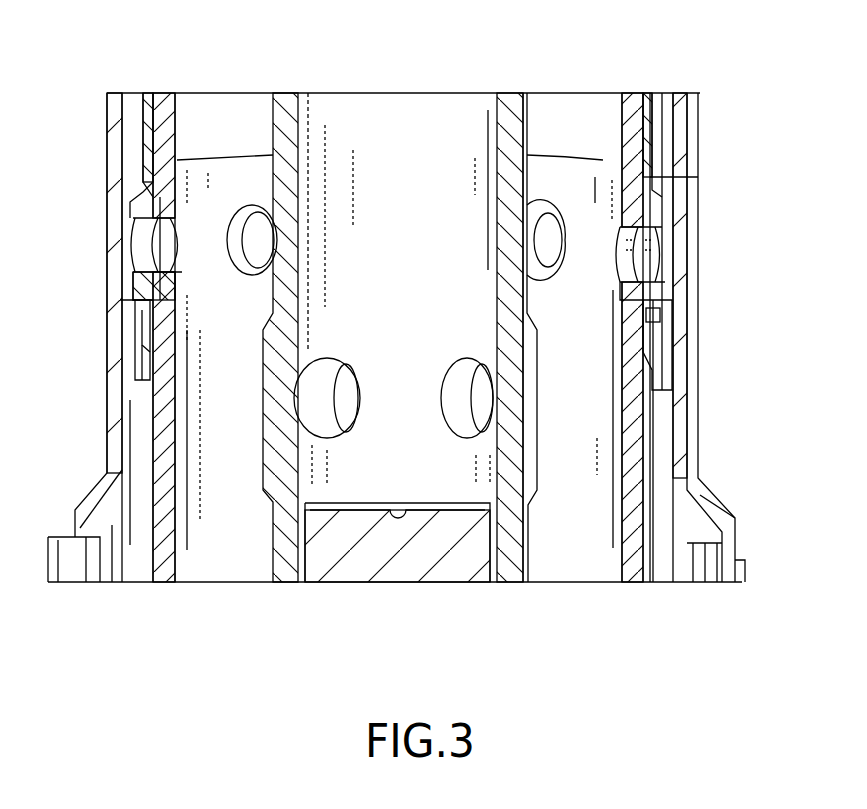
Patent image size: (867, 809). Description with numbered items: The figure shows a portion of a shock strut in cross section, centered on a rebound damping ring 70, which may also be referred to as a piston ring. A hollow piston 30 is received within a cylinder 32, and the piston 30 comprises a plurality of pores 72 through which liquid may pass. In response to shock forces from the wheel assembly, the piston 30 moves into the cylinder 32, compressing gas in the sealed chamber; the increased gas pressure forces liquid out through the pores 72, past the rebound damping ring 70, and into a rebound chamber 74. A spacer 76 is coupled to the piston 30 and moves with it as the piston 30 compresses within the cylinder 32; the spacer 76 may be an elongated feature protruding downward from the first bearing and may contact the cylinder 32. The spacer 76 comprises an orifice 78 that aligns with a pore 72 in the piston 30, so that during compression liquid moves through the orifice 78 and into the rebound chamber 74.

The piston 30 is at (643, 428).
The cylinder 32 is at (700, 122).
The rebound damping ring 70 is at (665, 320).
The pores 72 is at (530, 215).
The rebound chamber 74 is at (665, 487).
The spacer 76 is at (653, 178).
The orifice 78 is at (643, 243).